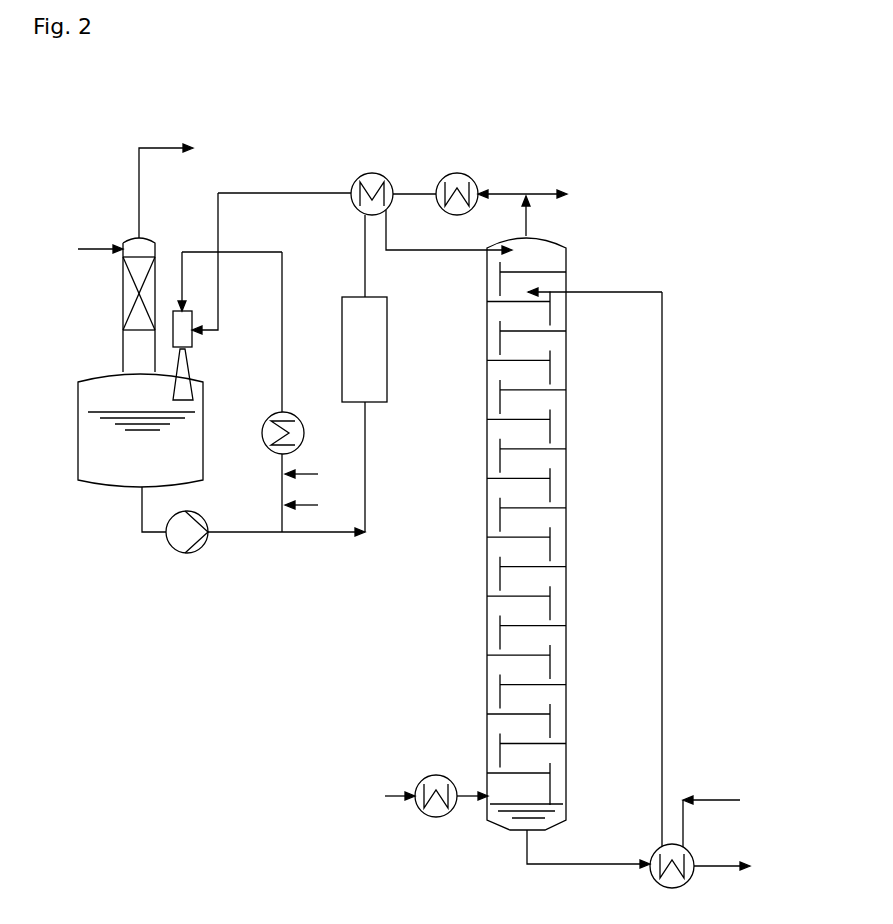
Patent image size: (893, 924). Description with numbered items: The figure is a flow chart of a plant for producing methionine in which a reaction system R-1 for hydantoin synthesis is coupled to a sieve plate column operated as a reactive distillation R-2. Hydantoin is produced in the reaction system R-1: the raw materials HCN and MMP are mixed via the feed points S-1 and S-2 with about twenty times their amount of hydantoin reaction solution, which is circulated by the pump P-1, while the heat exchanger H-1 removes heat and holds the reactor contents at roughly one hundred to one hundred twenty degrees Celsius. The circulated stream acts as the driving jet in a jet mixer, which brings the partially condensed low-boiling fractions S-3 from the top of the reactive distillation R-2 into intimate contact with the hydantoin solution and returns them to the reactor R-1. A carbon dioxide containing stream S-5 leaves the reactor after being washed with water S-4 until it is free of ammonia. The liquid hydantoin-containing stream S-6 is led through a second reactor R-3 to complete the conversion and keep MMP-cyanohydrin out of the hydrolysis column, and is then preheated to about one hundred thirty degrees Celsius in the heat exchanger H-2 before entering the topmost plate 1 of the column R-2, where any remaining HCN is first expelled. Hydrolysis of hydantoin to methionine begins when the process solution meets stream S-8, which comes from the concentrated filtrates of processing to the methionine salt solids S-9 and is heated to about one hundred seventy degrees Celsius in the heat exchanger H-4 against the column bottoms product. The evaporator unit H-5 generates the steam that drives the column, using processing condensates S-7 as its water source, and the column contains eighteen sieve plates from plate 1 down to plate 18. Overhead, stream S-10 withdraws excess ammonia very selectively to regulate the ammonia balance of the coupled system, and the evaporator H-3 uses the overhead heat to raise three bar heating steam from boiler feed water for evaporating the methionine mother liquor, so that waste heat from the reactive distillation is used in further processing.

The reaction system R-1 is at (140, 362).
The reactive distillation R-2 is at (526, 534).
The second reactor R-3 is at (364, 373).
The heat exchanger H-1 is at (272, 392).
The heat exchanger H-2 is at (365, 209).
The evaporator H-3 is at (435, 190).
The heat exchanger H-4 is at (610, 588).
The evaporator unit H-5 is at (436, 790).
The pump P-1 is at (175, 532).
The feed point S-1 is at (315, 505).
The feed point S-2 is at (315, 474).
The partially condensed low-boiling fractions S-3 is at (230, 266).
The wash water S-4 is at (80, 249).
The CO2-containing stream S-5 is at (186, 188).
The liquid hydantoin-containing stream S-6 is at (286, 540).
The condensates from processing S-7 is at (382, 796).
The concentrated filtrate stream S-8 is at (731, 818).
The methionine salt solids stream S-9 is at (738, 866).
The ammonia withdrawal stream S-10 is at (546, 210).
The plate 1 is at (523, 263).
The sieve plate 18 is at (525, 763).